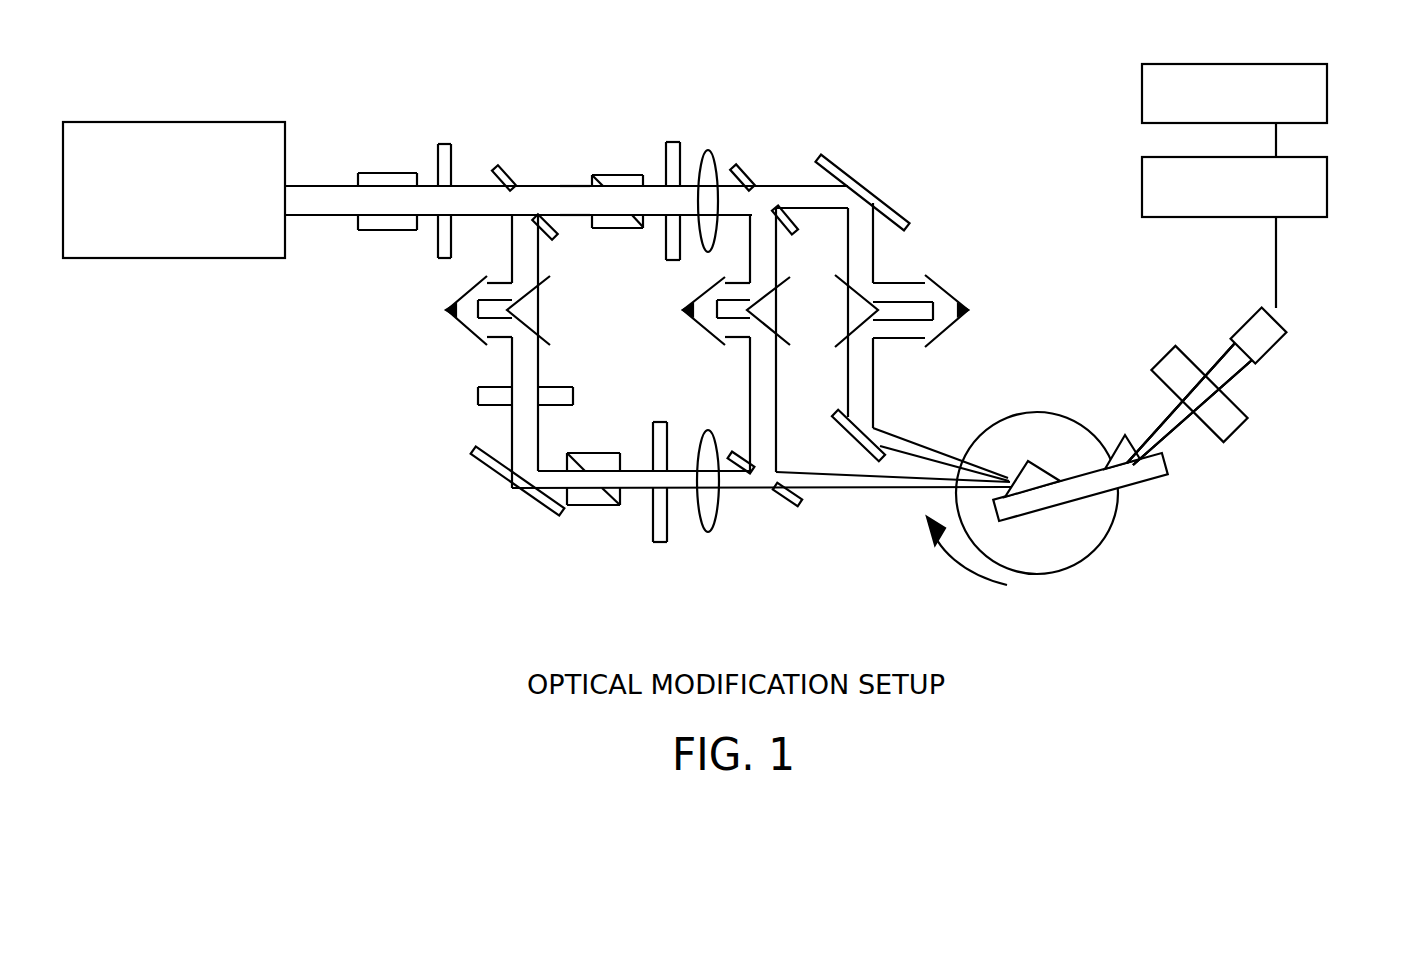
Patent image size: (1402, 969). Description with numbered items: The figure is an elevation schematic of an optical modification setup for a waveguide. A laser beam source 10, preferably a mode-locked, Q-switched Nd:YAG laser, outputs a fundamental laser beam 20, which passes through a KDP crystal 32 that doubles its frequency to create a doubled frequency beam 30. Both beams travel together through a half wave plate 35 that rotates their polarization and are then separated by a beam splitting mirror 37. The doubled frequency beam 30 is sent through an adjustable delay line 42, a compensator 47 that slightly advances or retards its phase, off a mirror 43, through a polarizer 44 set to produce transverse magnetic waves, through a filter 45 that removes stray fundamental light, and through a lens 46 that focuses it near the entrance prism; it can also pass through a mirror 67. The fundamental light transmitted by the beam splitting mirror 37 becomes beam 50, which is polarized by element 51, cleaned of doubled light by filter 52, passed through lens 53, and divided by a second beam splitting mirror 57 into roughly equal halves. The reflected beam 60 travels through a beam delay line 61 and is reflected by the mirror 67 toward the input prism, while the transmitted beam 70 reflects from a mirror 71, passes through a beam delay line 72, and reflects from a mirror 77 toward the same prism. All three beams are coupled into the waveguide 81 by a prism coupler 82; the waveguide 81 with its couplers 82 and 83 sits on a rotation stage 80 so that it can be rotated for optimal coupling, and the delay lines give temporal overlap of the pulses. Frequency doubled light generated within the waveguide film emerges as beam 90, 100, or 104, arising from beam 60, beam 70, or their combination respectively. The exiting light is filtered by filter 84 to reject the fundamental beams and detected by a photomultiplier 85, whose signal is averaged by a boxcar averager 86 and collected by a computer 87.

The laser beam source 10 is at (127, 122).
The laser beam 20 is at (300, 216).
The doubled frequency beam 30 is at (533, 243).
The KDP crystal 32 is at (402, 172).
The half wave plate 35 is at (444, 259).
The beam splitting mirror 37 is at (497, 165).
The delay line 42 is at (530, 297).
The mirror 43 is at (508, 480).
The polarizer 44 is at (595, 505).
The filter 45 is at (660, 542).
The lens 46 is at (708, 532).
The compensator 47 is at (478, 394).
The beam 50 is at (561, 193).
The polarizer element 51 is at (617, 175).
The filter 52 is at (673, 142).
The lens 53 is at (707, 152).
The beam splitting mirror 57 is at (737, 167).
The reflected beam 60 is at (757, 400).
The beam delay line 61 is at (698, 328).
The mirror 67 is at (798, 505).
The beam 70 is at (866, 402).
The mirror 71 is at (877, 200).
The beam delay line 72 is at (947, 292).
The mirror 77 is at (853, 438).
The rotation stage 80 is at (1052, 560).
The waveguide 81 is at (1133, 487).
The prism coupler 82 is at (1030, 473).
The coupler 83 is at (1133, 447).
The filter 84 is at (1167, 365).
The photomultiplier 85 is at (1268, 335).
The boxcar averager 86 is at (1320, 190).
The computer 87 is at (1320, 100).
The frequency doubled beam 90 is at (1238, 373).
The frequency doubled beam 100 is at (1189, 404).
The frequency doubled beam 104 is at (1247, 404).